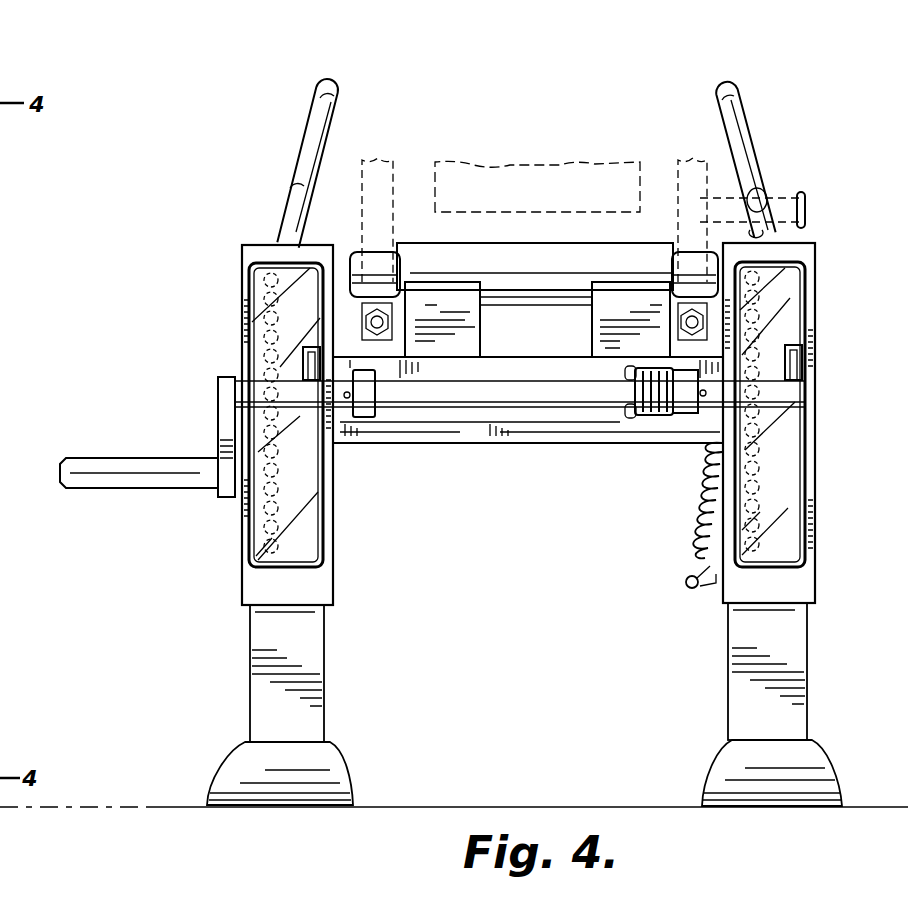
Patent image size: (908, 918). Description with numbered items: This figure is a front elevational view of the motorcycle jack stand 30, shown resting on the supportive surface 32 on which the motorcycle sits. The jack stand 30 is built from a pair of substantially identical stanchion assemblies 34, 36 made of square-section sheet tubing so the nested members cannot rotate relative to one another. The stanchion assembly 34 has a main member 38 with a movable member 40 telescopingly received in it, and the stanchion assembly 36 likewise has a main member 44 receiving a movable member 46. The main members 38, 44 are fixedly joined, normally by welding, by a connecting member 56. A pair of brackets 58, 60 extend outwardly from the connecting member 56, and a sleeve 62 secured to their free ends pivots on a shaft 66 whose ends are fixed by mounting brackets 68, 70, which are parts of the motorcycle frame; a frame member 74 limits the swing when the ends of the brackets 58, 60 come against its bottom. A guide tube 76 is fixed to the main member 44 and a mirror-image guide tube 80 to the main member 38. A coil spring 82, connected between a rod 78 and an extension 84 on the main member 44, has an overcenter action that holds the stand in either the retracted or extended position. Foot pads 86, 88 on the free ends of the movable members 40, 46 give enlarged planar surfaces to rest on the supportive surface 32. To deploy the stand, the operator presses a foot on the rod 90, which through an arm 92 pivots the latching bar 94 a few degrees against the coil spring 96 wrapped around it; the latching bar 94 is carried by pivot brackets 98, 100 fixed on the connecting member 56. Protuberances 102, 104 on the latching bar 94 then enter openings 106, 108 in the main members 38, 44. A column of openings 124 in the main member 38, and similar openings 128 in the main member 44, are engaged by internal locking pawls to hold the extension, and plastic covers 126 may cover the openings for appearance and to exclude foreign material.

The motorcycle jack stand 30 is at (832, 252).
The supportive surface 32 is at (510, 805).
The stanchion assembly 34 is at (338, 584).
The stanchion assembly 36 is at (727, 640).
The main member 38 is at (258, 585).
The movable member 40 is at (250, 682).
The main member 44 is at (790, 590).
The movable member 46 is at (800, 658).
The connecting member 56 is at (540, 443).
The bracket 58 is at (450, 295).
The bracket 60 is at (642, 295).
The sleeve 62 is at (540, 255).
The shaft 66 is at (372, 262).
The mounting bracket 68 is at (378, 160).
The mounting bracket 70 is at (692, 160).
The member of the motorcycle frame 74 is at (562, 160).
The guide tube 76 is at (748, 118).
The rod 78 is at (808, 200).
The guide tube 80 is at (320, 112).
The coil spring 82 is at (703, 518).
The extension 84 is at (688, 578).
The foot pad 86 is at (228, 770).
The foot pad 88 is at (732, 770).
The rod 90 is at (128, 458).
The arm 92 is at (225, 420).
The latching bar 94 is at (462, 410).
The coil spring 96 is at (652, 418).
The pivot bracket 98 is at (370, 415).
The pivot bracket 100 is at (688, 416).
The protuberance 102 is at (305, 378).
The protuberance 104 is at (805, 378).
The opening 106 is at (305, 360).
The opening 108 is at (800, 360).
The openings 124 is at (270, 520).
The covers 126 is at (298, 522).
The openings 128 is at (770, 488).